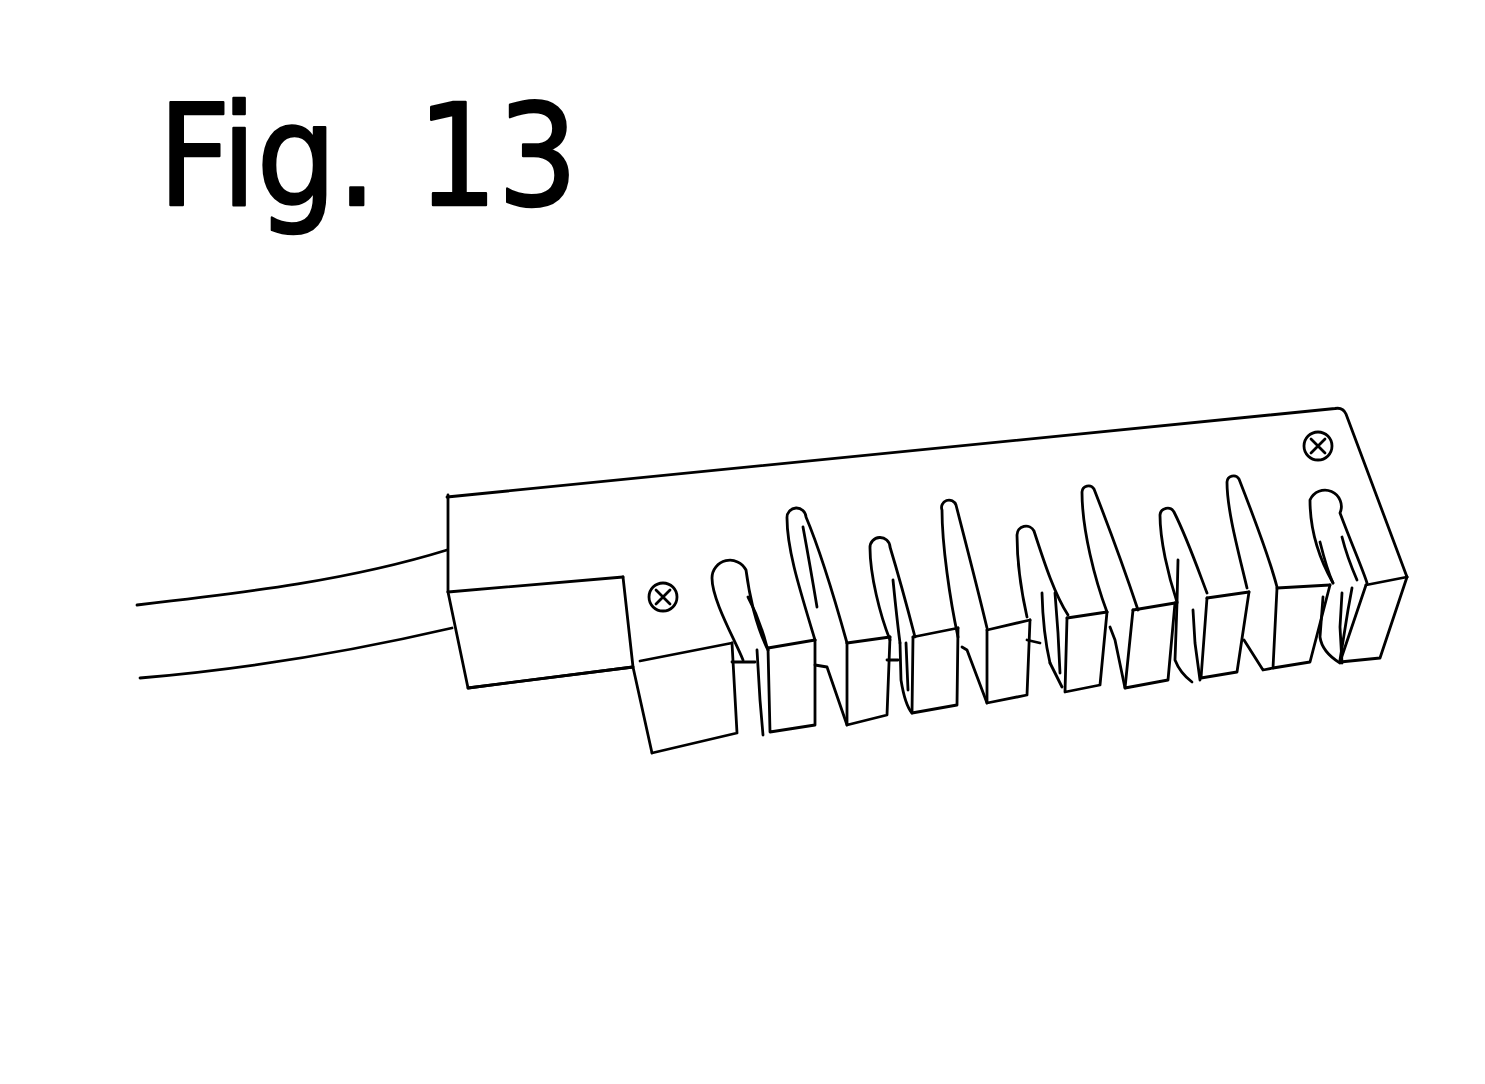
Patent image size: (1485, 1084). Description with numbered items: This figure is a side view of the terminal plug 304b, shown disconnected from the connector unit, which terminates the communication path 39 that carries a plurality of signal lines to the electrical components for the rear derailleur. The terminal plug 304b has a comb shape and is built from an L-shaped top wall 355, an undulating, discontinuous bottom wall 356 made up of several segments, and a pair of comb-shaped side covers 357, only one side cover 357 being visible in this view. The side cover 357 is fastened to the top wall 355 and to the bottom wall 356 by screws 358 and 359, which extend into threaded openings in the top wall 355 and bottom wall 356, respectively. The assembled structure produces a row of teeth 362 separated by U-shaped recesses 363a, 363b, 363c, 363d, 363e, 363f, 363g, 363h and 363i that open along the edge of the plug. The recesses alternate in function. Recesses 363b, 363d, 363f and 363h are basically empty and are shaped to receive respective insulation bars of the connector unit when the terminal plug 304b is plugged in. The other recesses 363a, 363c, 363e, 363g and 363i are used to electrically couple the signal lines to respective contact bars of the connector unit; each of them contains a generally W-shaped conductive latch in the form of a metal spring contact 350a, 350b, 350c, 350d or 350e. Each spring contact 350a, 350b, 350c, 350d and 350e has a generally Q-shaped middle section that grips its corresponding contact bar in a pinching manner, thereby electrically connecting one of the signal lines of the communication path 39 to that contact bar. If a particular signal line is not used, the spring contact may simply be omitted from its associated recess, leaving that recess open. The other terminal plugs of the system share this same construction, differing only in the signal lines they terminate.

The communication path 39 is at (258, 607).
The terminal plug 304b is at (537, 478).
The top wall 355 is at (1370, 637).
The bottom wall 356 is at (551, 694).
The side cover 357 is at (848, 457).
The screw 358 is at (1333, 439).
The screw 359 is at (654, 584).
The teeth 362 is at (1373, 538).
The spring contact 350a is at (1342, 663).
The spring contact 350b is at (1200, 680).
The spring contact 350c is at (1062, 687).
The spring contact 350d is at (912, 713).
The spring contact 350e is at (755, 664).
The recess 363a is at (1320, 515).
The recess 363b is at (1238, 490).
The recess 363c is at (1167, 513).
The recess 363d is at (1090, 505).
The recess 363e is at (1027, 537).
The recess 363f is at (949, 517).
The recess 363g is at (878, 543).
The recess 363h is at (795, 525).
The recess 363i is at (728, 573).